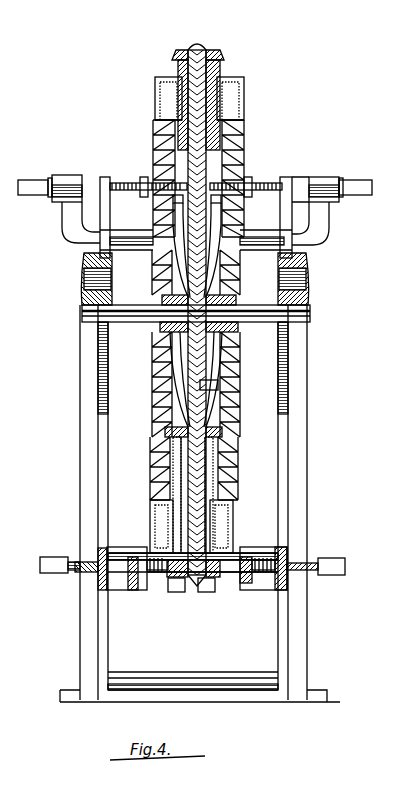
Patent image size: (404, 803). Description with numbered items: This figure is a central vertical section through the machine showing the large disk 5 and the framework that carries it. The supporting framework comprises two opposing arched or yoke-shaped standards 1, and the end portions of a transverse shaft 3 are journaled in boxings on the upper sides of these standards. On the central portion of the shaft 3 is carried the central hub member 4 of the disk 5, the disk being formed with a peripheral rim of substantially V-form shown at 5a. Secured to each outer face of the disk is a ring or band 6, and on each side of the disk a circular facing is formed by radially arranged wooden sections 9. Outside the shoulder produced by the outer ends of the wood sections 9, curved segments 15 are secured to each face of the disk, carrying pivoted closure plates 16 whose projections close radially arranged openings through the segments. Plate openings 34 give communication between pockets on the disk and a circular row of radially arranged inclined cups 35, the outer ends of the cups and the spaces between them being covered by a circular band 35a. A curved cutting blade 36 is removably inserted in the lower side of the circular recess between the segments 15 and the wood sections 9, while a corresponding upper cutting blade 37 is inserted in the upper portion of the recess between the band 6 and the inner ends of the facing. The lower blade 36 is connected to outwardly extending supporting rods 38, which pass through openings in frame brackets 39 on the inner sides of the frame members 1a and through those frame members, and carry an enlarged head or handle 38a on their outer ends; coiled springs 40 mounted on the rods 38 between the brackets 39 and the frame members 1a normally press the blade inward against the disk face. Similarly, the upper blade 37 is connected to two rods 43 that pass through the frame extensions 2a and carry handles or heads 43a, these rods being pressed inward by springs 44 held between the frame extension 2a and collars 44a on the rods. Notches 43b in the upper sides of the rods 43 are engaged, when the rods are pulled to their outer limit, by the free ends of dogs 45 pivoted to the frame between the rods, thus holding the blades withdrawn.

The standard 1 is at (90, 413).
The frame member 1a is at (98, 583).
The frame extension 2a is at (331, 178).
The transverse shaft 3 is at (306, 312).
The central hub member 4 is at (295, 271).
The disk 5 is at (218, 92).
The peripheral rim 5a is at (208, 50).
The ring or band 6 is at (165, 431).
The wooden section 9 is at (183, 96).
The curved segment 15 is at (180, 46).
The closure plate 16 is at (186, 55).
The plate opening 34 is at (182, 118).
The inclined cup 35 is at (178, 106).
The circular band 35a is at (157, 78).
The cutting blade 36 is at (165, 580).
The upper cutting blade 37 is at (160, 183).
The supporting rod 38 is at (143, 570).
The head or handle 38a is at (48, 562).
The frame bracket 39 is at (133, 592).
The coiled spring 40 is at (125, 548).
The rod 43 is at (120, 174).
The handle or head 43a is at (352, 180).
The notch 43b is at (87, 178).
The spring 44 is at (127, 192).
The collar 44a is at (249, 194).
The dog 45 is at (50, 178).